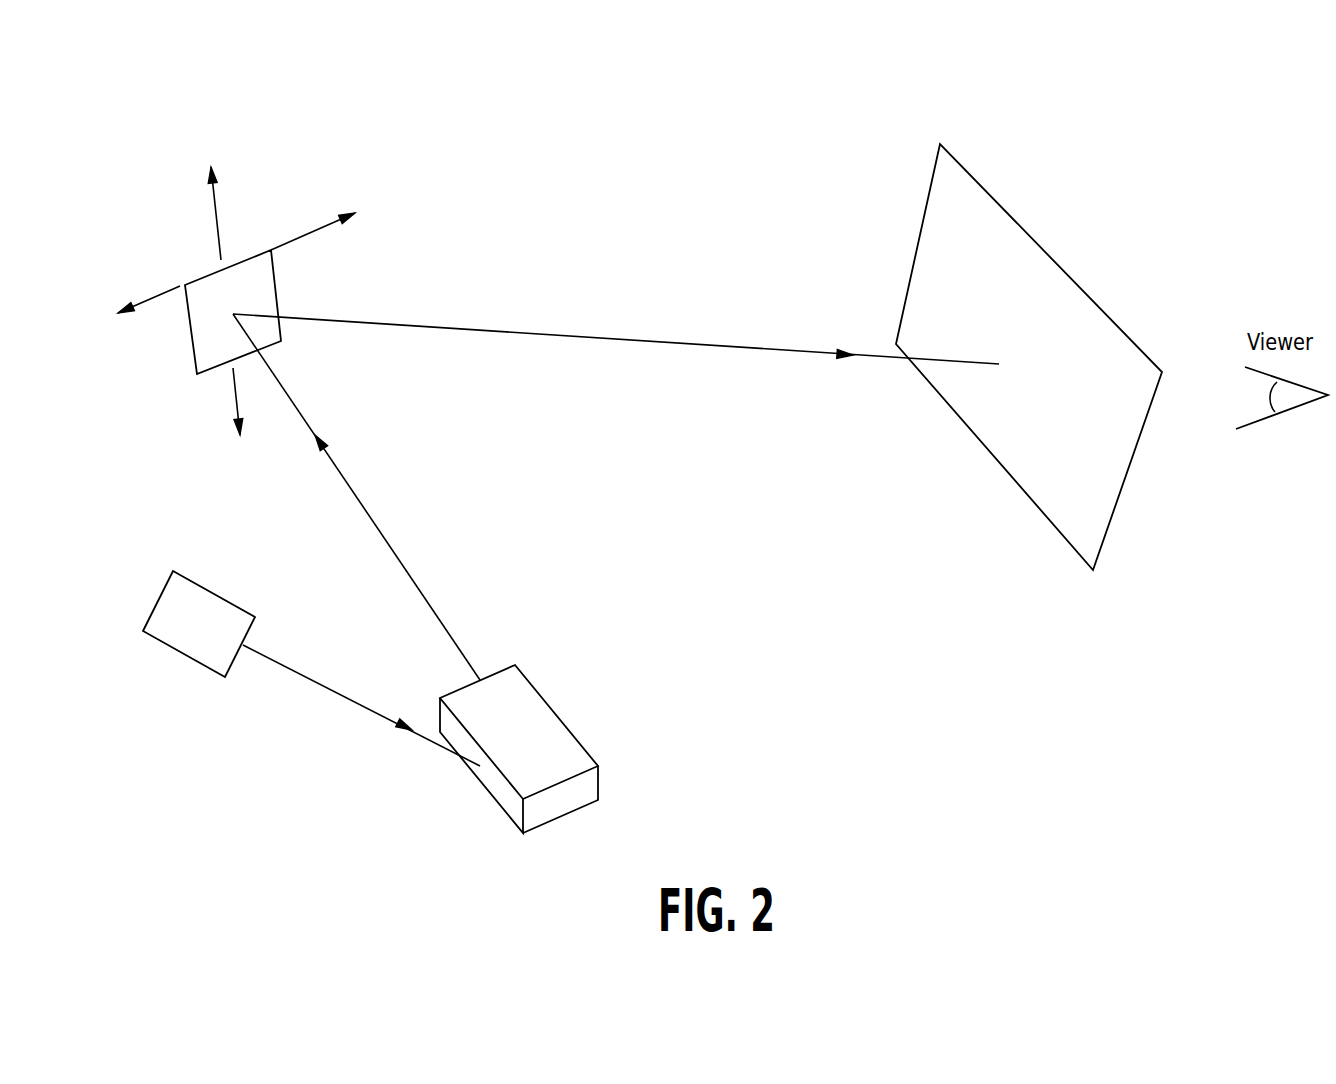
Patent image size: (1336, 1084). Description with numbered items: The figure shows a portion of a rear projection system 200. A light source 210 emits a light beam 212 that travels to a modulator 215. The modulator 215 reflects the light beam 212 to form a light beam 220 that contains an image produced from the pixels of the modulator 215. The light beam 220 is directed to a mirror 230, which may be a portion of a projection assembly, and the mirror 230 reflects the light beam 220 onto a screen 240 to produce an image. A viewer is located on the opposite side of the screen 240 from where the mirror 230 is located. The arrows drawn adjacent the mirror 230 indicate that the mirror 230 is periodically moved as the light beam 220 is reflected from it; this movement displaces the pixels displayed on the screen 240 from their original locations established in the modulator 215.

The rear projection system 200 is at (715, 160).
The light source 210 is at (221, 631).
The light beam 212 is at (348, 702).
The modulator 215 is at (536, 741).
The light beam 220 is at (652, 338).
The mirror 230 is at (192, 349).
The screen 240 is at (1081, 284).